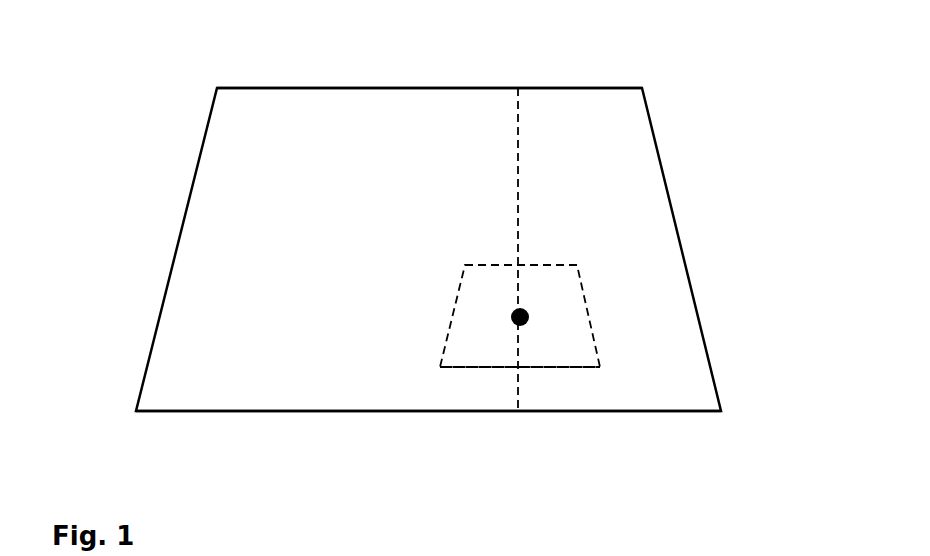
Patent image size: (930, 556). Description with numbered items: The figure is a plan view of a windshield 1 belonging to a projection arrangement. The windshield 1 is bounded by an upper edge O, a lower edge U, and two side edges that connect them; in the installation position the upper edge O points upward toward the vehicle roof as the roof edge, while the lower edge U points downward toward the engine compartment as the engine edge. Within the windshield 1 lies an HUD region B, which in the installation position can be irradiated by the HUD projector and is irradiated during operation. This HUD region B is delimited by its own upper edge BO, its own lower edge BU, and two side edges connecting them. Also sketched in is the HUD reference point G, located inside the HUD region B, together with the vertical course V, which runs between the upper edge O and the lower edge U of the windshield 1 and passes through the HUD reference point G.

The windshield 1 is at (158, 98).
The upper edge O is at (267, 88).
The lower edge U is at (182, 411).
The vertical course V is at (522, 210).
The HUD region B is at (581, 270).
The upper edge of the HUD region BO is at (497, 267).
The lower edge of the HUD region BU is at (485, 367).
The HUD reference point G is at (530, 317).